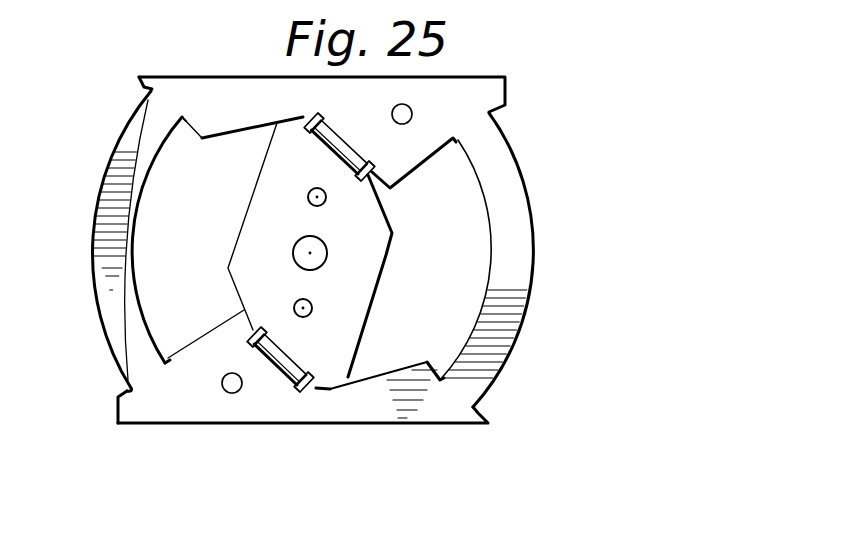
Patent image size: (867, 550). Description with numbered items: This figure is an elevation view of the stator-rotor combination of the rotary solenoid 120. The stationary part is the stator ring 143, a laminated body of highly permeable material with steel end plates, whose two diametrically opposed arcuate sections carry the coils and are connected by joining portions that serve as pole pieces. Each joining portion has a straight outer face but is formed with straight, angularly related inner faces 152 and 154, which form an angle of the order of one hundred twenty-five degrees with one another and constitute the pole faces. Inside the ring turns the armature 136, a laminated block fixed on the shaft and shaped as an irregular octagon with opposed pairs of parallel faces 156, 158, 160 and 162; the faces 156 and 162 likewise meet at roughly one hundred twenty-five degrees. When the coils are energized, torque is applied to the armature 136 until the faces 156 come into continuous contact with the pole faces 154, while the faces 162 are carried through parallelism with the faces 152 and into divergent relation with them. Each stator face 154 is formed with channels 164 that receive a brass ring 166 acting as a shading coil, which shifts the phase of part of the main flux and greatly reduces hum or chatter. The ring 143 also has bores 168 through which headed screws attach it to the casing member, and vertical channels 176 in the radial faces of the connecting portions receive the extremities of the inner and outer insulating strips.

The solenoid 120 is at (155, 428).
The armature 136 is at (389, 263).
The ring 143 is at (536, 242).
The inner face 152 is at (230, 137).
The pole face 154 is at (234, 318).
The rotor face 156 is at (377, 173).
The rotor face 158 is at (234, 287).
The rotor face 160 is at (240, 227).
The rotor face 162 is at (291, 116).
The channel 164 is at (308, 108).
The brass ring 166 is at (370, 128).
The bore 168 is at (412, 116).
The vertical channel 176 is at (128, 386).